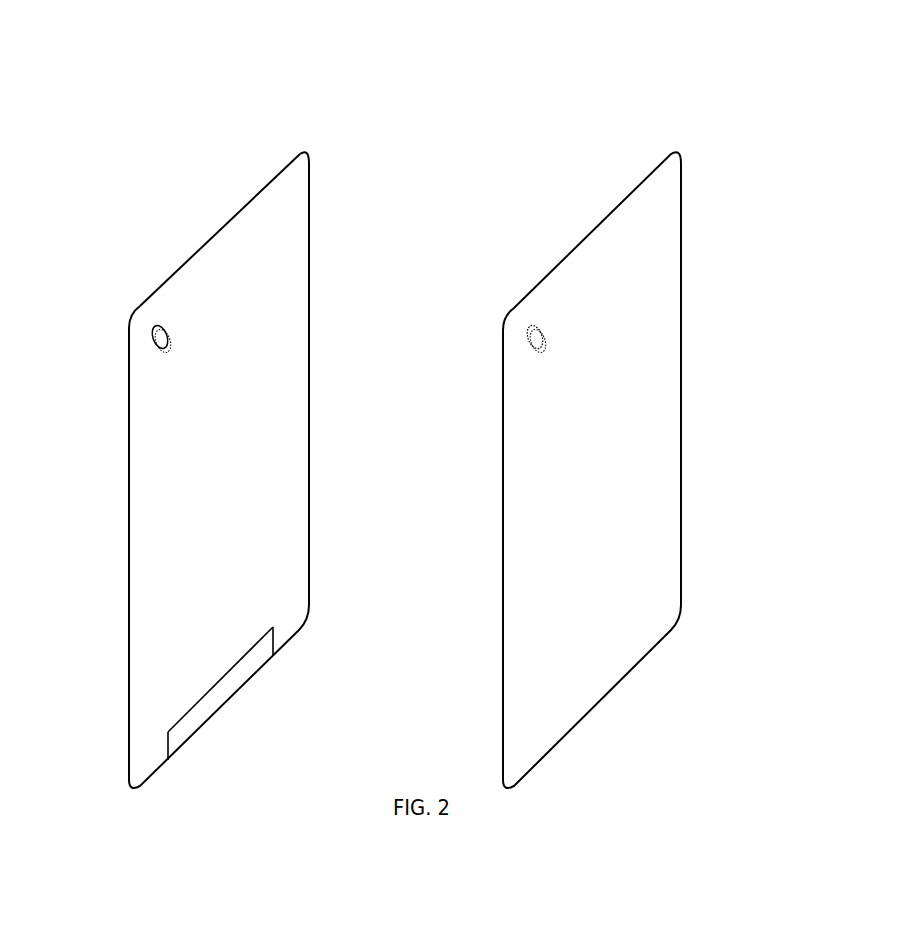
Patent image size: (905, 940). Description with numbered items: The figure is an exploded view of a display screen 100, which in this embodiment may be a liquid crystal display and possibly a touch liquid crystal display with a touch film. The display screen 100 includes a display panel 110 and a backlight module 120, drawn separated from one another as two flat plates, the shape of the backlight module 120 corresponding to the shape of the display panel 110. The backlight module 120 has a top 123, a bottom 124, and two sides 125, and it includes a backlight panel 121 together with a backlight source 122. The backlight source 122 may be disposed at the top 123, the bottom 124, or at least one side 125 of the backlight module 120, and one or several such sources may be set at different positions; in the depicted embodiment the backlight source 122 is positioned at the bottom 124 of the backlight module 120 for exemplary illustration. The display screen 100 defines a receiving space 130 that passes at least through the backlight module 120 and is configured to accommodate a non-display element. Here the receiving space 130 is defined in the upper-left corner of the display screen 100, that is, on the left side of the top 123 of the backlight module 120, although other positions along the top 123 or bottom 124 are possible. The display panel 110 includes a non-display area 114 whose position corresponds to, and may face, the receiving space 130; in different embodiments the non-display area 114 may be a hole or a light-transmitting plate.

The display screen 100 is at (512, 72).
The display panel 110 is at (708, 263).
The non-display area 114 is at (533, 330).
The backlight module 120 is at (330, 230).
The backlight panel 121 is at (147, 567).
The backlight source 122 is at (193, 717).
The top 123 is at (203, 250).
The bottom 124 is at (255, 673).
The side 125 is at (129, 505).
The receiving space 130 is at (157, 335).